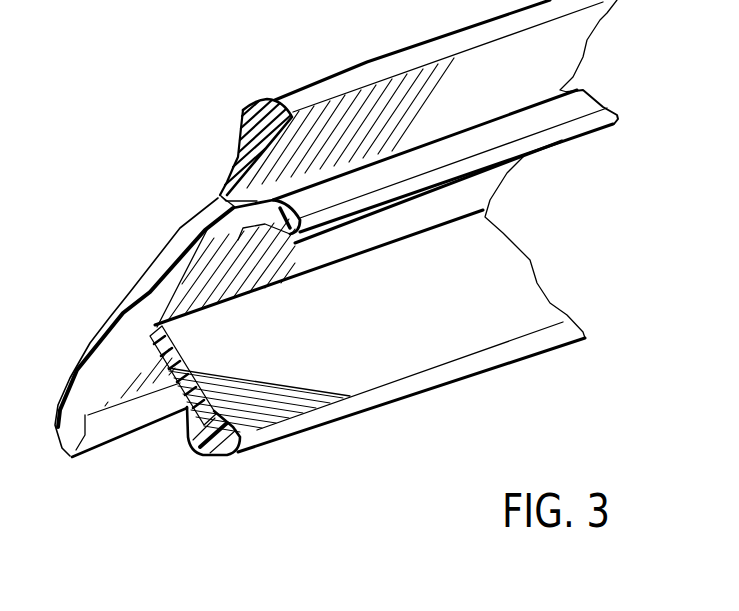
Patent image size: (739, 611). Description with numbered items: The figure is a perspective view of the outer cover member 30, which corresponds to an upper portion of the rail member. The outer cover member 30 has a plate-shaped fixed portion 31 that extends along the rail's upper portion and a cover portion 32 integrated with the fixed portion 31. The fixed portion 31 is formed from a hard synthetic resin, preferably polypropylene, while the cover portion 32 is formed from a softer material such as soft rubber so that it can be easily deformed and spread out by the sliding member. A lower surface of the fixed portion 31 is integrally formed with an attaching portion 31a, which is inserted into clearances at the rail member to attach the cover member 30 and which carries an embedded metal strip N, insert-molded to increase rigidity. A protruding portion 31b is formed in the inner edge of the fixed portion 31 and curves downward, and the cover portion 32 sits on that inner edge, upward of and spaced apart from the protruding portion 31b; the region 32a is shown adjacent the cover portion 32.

The outer cover member 30 is at (95, 155).
The fixed portion 31 is at (150, 293).
The attaching portion 31a is at (200, 432).
The protruding portion 31b is at (237, 235).
The cover portion 32 is at (257, 107).
The neck portion 32a is at (220, 200).
The metal strip N is at (152, 368).